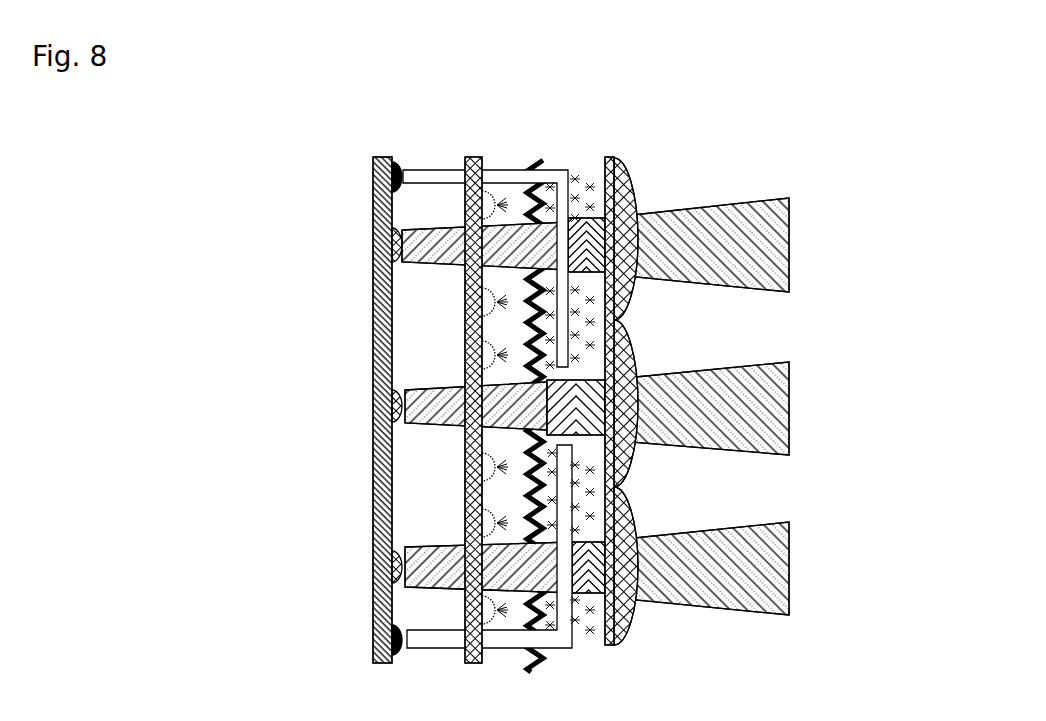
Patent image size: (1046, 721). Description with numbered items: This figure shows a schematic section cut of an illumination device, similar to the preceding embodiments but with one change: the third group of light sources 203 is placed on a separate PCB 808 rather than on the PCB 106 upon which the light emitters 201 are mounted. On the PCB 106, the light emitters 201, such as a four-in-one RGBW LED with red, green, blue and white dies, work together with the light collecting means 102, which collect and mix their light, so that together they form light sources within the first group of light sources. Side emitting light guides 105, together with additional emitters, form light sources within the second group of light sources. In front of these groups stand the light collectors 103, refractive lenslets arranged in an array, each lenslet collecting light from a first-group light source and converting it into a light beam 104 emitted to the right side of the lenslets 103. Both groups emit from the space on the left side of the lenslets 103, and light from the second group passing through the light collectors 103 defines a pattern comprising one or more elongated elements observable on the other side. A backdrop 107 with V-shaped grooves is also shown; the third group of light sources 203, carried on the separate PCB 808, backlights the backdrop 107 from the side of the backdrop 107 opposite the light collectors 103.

The light collecting means 102 is at (438, 247).
The light collectors 103 is at (623, 200).
The light beam 104 is at (735, 245).
The side emitting light guides 105 is at (447, 168).
The PCB 106 is at (377, 382).
The backdrop 107 is at (539, 160).
The light emitters 201 is at (377, 238).
The third group of light sources 203 is at (491, 198).
The separate PCB 808 is at (472, 493).